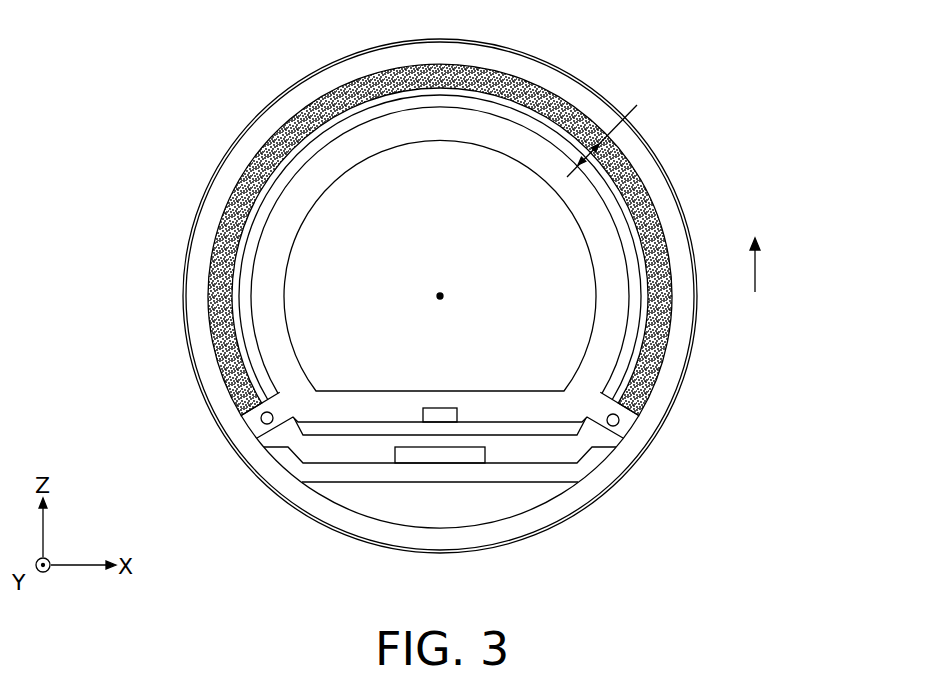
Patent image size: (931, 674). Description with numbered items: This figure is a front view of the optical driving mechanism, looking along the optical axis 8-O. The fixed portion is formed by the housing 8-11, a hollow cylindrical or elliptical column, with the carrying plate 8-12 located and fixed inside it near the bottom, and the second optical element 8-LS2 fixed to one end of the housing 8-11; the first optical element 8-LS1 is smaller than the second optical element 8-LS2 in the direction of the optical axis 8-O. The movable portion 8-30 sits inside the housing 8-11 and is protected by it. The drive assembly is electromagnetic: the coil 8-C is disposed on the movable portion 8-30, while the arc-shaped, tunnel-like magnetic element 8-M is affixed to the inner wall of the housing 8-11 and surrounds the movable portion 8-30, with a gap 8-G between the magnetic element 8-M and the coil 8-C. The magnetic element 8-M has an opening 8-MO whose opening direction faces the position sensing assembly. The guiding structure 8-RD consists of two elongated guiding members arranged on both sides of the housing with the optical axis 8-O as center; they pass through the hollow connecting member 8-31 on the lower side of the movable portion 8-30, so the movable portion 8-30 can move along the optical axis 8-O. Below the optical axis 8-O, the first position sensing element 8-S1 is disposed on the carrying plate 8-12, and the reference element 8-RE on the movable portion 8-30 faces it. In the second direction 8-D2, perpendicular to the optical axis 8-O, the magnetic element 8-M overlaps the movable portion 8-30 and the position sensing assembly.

The housing 8-11 is at (540, 76).
The carrying plate 8-12 is at (540, 472).
The magnetic element 8-M is at (345, 90).
The coil 8-C is at (280, 147).
The gap 8-G is at (687, 105).
The first optical element 8-LS1 is at (360, 320).
The second optical element 8-LS2 is at (653, 150).
The movable portion 8-30 is at (290, 211).
The optical axis 8-O is at (463, 286).
The reference element 8-RE is at (441, 411).
The opening 8-MO is at (633, 423).
The guiding structure 8-RD is at (261, 418).
The connecting member 8-31 is at (257, 437).
The first position sensing element 8-S1 is at (440, 456).
The second direction 8-D2 is at (785, 265).